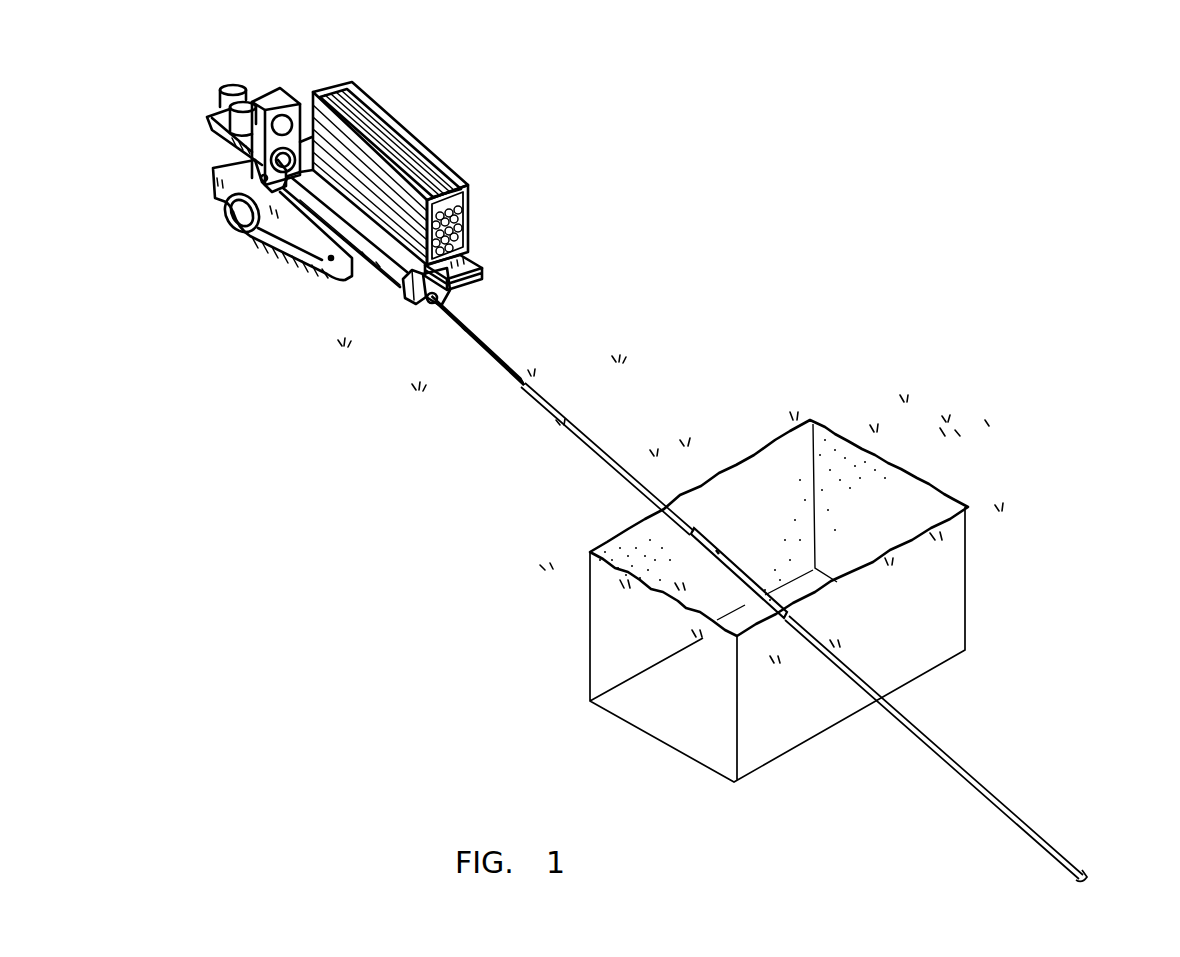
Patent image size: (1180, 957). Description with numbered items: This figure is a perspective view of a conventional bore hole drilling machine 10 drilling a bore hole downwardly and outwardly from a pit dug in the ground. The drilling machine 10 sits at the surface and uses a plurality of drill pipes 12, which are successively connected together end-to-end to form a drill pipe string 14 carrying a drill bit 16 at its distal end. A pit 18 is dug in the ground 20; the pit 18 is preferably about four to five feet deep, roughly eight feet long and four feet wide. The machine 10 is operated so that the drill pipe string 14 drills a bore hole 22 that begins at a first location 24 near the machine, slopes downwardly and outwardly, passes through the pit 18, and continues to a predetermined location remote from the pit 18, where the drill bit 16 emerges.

The bore hole drilling machine 10 is at (465, 148).
The drill pipe 12 is at (473, 340).
The drill pipe string 14 is at (736, 545).
The drill bit 16 is at (1087, 870).
The pit 18 is at (903, 500).
The ground 20 is at (700, 380).
The bore hole 22 is at (968, 767).
The first location 24 is at (523, 378).